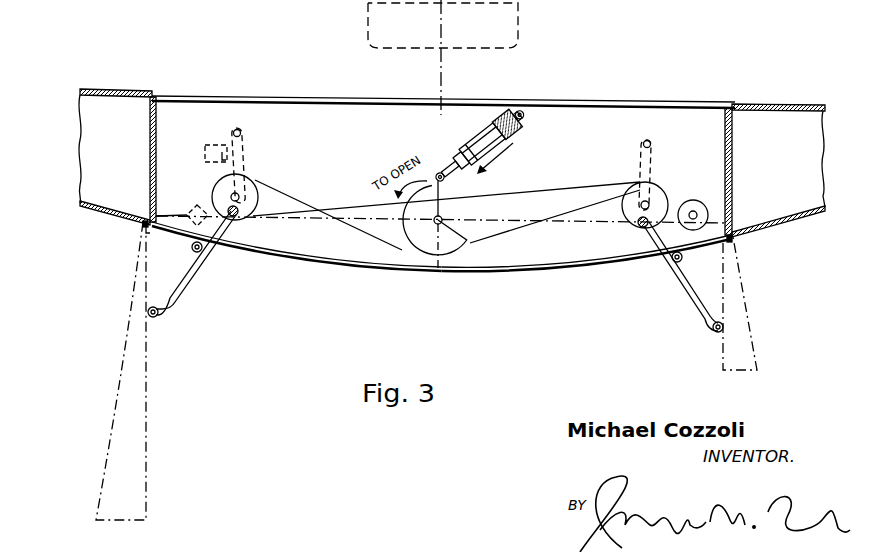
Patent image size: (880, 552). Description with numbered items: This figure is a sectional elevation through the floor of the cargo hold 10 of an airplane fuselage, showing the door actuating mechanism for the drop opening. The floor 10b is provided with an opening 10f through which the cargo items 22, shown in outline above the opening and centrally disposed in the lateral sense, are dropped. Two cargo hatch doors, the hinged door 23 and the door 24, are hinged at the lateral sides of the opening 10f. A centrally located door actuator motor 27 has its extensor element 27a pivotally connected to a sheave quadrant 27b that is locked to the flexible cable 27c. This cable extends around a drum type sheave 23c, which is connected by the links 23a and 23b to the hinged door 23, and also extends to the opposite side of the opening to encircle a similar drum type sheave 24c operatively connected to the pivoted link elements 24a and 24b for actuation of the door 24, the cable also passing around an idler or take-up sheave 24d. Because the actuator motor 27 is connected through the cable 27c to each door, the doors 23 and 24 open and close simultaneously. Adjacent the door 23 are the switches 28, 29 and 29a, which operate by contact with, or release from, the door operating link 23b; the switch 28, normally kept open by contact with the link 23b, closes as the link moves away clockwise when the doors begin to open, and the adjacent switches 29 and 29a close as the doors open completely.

The cargo hold 10 is at (759, 104).
The floor 10b is at (127, 92).
The opening 10f is at (726, 118).
The cargo items 22 is at (520, 28).
The hinged door 23 is at (341, 263).
The link 23a is at (247, 152).
The link 23b is at (204, 155).
The drum type sheave 23c is at (221, 187).
The door 24 is at (540, 270).
The pivoted link element 24a is at (637, 173).
The pivoted link element 24b is at (653, 163).
The drum type sheave 24c is at (658, 193).
The idler or take-up sheave 24d is at (697, 209).
The door actuator motor 27 is at (461, 146).
The extensor element 27a is at (456, 172).
The sheave quadrant 27b is at (468, 243).
The flexible cable 27c is at (293, 197).
The switch 28 is at (216, 145).
The switch 29 is at (188, 240).
The switch 29a is at (203, 207).